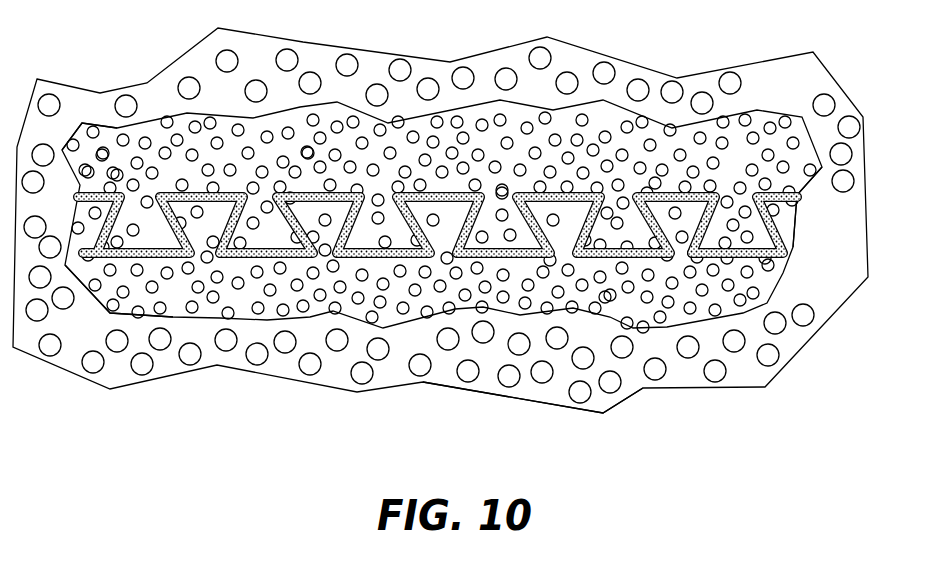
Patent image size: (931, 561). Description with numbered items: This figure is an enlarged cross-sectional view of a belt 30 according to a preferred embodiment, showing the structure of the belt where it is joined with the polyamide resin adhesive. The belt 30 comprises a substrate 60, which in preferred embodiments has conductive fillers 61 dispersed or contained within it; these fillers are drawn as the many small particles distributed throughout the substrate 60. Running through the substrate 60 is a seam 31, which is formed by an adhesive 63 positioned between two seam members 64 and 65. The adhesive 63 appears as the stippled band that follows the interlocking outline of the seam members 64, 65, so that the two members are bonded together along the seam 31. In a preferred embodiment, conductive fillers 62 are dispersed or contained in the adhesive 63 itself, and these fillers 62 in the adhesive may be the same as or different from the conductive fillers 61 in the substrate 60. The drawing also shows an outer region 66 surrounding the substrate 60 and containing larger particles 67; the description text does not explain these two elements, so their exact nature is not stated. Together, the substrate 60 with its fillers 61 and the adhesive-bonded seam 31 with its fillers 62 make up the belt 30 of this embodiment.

The belt 30 is at (504, 433).
The seam 31 is at (812, 195).
The substrate 60 is at (445, 210).
The conductive fillers 61 is at (82, 123).
The conductive fillers 62 is at (103, 313).
The adhesive 63 is at (79, 191).
The seam member 64 is at (747, 263).
The seam member 65 is at (785, 243).
The outer layer 66 is at (647, 65).
The large perforations 67 is at (556, 47).